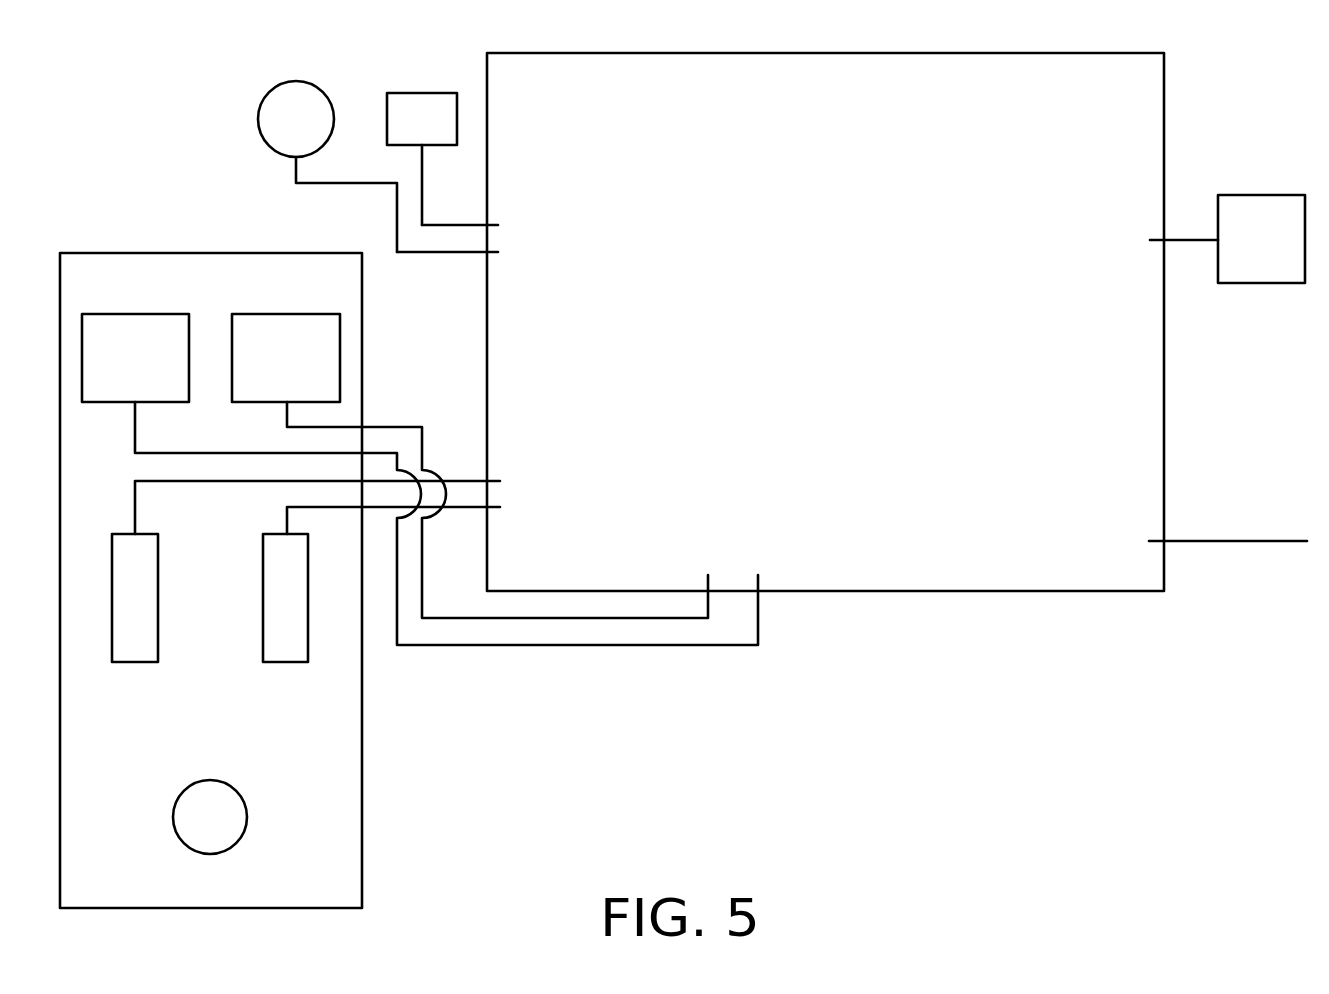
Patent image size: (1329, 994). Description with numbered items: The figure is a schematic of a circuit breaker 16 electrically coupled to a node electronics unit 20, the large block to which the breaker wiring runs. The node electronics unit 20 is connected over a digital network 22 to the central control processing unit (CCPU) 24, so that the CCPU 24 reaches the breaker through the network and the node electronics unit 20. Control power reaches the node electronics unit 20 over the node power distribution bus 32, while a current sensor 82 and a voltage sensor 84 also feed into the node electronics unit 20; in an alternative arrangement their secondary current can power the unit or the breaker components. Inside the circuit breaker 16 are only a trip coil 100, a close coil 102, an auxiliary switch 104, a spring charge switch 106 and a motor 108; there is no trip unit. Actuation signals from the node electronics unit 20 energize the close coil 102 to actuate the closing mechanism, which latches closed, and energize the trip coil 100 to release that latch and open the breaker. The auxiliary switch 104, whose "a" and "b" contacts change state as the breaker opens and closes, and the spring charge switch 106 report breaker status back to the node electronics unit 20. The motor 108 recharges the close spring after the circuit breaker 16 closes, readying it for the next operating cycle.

The circuit breaker 16 is at (208, 253).
The node electronics unit 20 is at (1207, 102).
The digital network 22 is at (1183, 240).
The central control processing unit (CCPU) 24 is at (1279, 265).
The node power distribution bus 32 is at (1178, 545).
The current sensor 82 is at (280, 83).
The voltage sensor 84 is at (422, 93).
The trip coil 100 is at (131, 314).
The close coil 102 is at (281, 314).
The auxiliary switch 104 is at (158, 577).
The spring charge switch 106 is at (263, 637).
The motor 108 is at (247, 803).